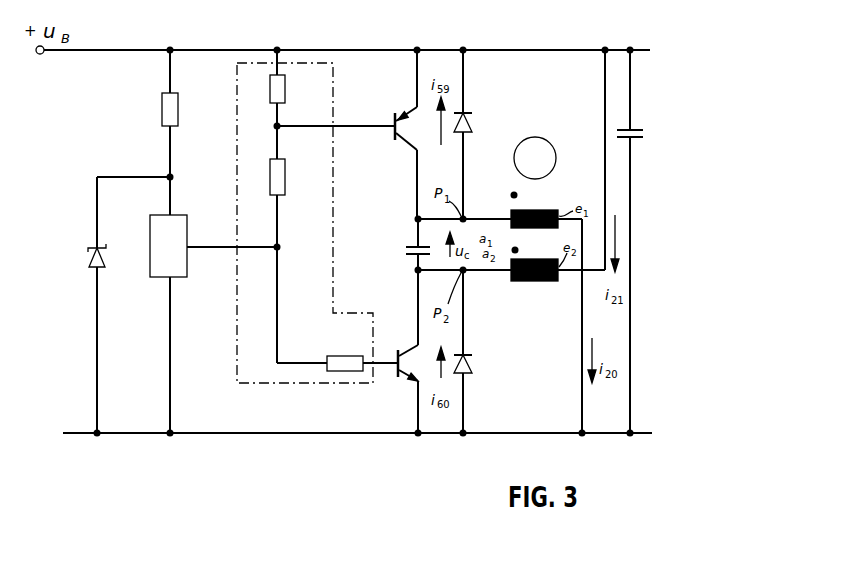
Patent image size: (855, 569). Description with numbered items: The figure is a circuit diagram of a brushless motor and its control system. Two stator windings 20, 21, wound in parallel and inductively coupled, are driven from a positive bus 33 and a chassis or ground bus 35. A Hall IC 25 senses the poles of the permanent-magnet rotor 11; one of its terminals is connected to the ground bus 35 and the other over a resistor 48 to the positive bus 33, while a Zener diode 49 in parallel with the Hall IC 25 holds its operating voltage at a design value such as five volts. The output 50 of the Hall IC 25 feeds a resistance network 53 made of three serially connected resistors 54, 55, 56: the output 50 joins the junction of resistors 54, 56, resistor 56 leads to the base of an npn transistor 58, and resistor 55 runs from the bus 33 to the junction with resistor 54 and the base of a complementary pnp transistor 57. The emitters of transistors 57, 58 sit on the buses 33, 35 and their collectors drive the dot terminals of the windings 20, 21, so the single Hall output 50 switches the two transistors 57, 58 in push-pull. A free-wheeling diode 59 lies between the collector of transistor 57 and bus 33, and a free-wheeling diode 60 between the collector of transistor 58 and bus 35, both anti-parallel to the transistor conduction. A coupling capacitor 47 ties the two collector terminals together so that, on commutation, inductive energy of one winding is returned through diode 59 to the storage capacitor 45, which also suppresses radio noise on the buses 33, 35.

The rotor 11 is at (527, 145).
The winding 20 is at (545, 210).
The winding 21 is at (535, 281).
The Hall IC 25 is at (182, 273).
The positive bus 33 is at (232, 50).
The ground bus 35 is at (228, 433).
The storage capacitor 45 is at (645, 136).
The coupling capacitor 47 is at (404, 249).
The resistor 48 is at (178, 108).
The Zener diode 49 is at (88, 258).
The output 50 is at (194, 245).
The resistance network 53 is at (300, 62).
The resistor 54 is at (285, 173).
The resistor 55 is at (285, 89).
The resistor 56 is at (345, 362).
The pnp transistor 57 is at (400, 146).
The npn transistor 58 is at (400, 383).
The free-wheeling diode 59 is at (472, 118).
The free-wheeling diode 60 is at (474, 364).